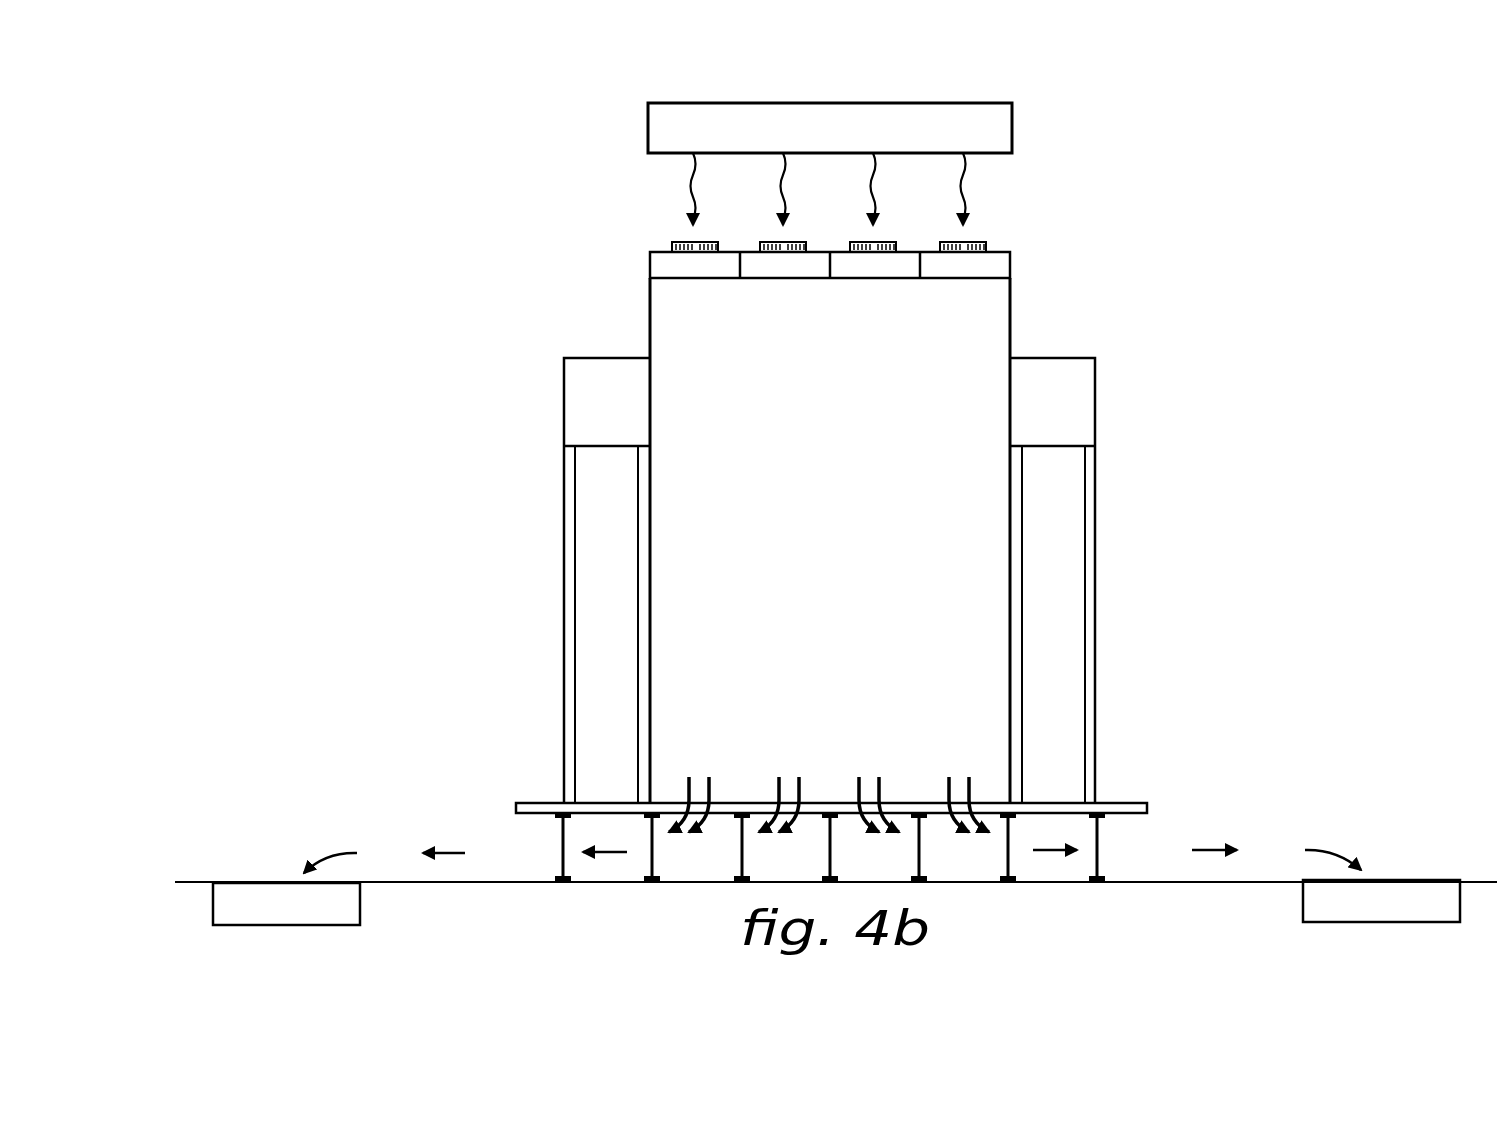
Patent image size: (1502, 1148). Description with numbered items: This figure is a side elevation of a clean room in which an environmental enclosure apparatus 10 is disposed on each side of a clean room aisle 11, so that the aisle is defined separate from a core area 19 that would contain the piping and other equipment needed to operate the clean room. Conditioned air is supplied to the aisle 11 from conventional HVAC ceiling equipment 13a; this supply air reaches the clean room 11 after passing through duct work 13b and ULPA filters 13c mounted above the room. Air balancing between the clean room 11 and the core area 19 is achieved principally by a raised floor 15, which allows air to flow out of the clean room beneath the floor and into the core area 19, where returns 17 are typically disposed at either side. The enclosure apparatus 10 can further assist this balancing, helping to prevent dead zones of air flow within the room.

The environmental enclosure apparatus 10 is at (618, 603).
The clean room aisle 11 is at (938, 593).
The HVAC ceiling equipment 13a is at (1012, 124).
The duct work 13b is at (963, 192).
The ULPA filters 13c is at (703, 278).
The raised floor 15 is at (1123, 802).
The returns 17 is at (238, 883).
The core area 19 is at (479, 623).